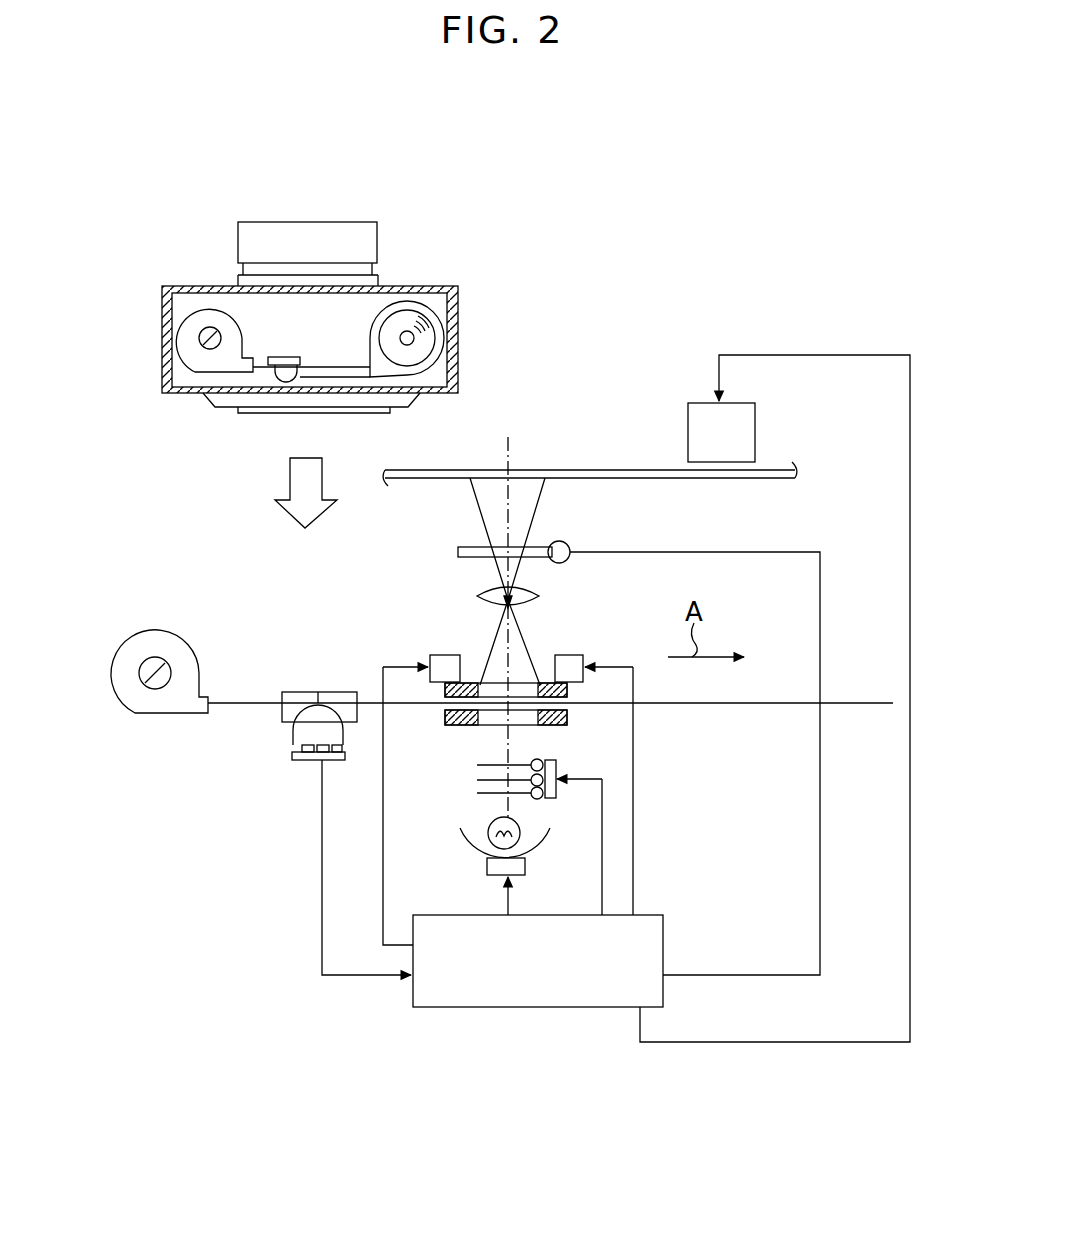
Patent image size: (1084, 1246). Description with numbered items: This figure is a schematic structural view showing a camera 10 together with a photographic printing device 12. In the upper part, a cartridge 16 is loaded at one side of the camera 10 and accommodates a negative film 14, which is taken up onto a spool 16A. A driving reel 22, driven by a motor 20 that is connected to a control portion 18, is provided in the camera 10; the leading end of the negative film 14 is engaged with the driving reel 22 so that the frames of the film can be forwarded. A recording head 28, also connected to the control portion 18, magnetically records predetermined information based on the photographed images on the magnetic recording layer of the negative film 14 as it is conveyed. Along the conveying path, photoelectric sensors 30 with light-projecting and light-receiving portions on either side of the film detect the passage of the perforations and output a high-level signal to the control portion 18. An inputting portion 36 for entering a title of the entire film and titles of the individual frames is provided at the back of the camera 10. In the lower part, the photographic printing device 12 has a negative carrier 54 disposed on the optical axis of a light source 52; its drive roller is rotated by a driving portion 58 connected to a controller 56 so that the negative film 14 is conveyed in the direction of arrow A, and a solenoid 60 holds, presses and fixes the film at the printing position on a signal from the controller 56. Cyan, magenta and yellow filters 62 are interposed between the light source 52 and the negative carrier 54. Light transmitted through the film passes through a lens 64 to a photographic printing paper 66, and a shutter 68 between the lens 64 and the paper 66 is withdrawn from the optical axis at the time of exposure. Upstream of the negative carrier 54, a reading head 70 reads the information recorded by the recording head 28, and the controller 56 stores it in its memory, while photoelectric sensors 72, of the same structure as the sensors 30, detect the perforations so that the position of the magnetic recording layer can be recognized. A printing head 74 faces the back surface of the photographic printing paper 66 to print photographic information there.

The camera 10 is at (467, 298).
The photographic printing device 12 is at (843, 556).
The negative film 14 is at (333, 367).
The cartridge 16 is at (213, 306).
The spool 16A is at (205, 328).
The control portion 18 is at (337, 413).
The motor 20 is at (414, 310).
The driving reel 22 is at (412, 346).
The recording head 28 is at (276, 380).
The photoelectric sensor 30 is at (281, 357).
The inputting portion 36 is at (274, 413).
The light source 52 is at (547, 848).
The negative carrier 54 is at (541, 681).
The controller 56 is at (574, 1008).
The driving portion 58 is at (447, 653).
The solenoid 60 is at (577, 655).
The filters 62 is at (557, 765).
The lens 64 is at (538, 594).
The photographic printing paper 66 is at (588, 470).
The shutter 68 is at (566, 544).
The reading head 70 is at (290, 730).
The photoelectric sensor 72 is at (314, 692).
The printing head 74 is at (700, 421).